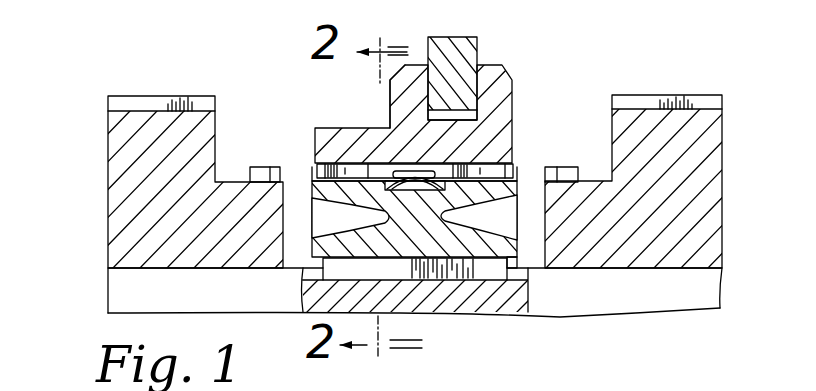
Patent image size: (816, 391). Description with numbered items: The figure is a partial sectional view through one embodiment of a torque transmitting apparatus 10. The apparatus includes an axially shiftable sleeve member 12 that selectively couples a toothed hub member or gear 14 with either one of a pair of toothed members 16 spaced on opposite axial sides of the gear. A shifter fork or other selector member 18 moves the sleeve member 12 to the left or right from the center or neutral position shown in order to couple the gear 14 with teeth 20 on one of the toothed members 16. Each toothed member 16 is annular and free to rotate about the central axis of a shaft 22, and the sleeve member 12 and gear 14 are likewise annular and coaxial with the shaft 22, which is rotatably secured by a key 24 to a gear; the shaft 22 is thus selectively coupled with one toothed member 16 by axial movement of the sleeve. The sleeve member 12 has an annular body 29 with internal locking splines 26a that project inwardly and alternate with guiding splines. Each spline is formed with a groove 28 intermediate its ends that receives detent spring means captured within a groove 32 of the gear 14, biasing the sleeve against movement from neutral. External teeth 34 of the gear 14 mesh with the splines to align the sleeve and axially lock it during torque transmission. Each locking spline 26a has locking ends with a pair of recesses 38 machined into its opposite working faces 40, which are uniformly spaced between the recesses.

The torque transmitting apparatus 10 is at (540, 53).
The sleeve member 12 is at (525, 83).
The toothed hub member or gear 14 is at (298, 234).
The toothed members 16 is at (106, 156).
The selector member 18 is at (468, 46).
The teeth 20 is at (258, 176).
The shaft 22 is at (603, 287).
The key 24 is at (463, 270).
The locking splines 26a is at (367, 182).
The groove 28 is at (422, 186).
The annular body 29 is at (403, 113).
The groove 32 is at (405, 190).
The external teeth 34 is at (312, 177).
The recesses 38 is at (352, 167).
The working faces 40 is at (380, 170).